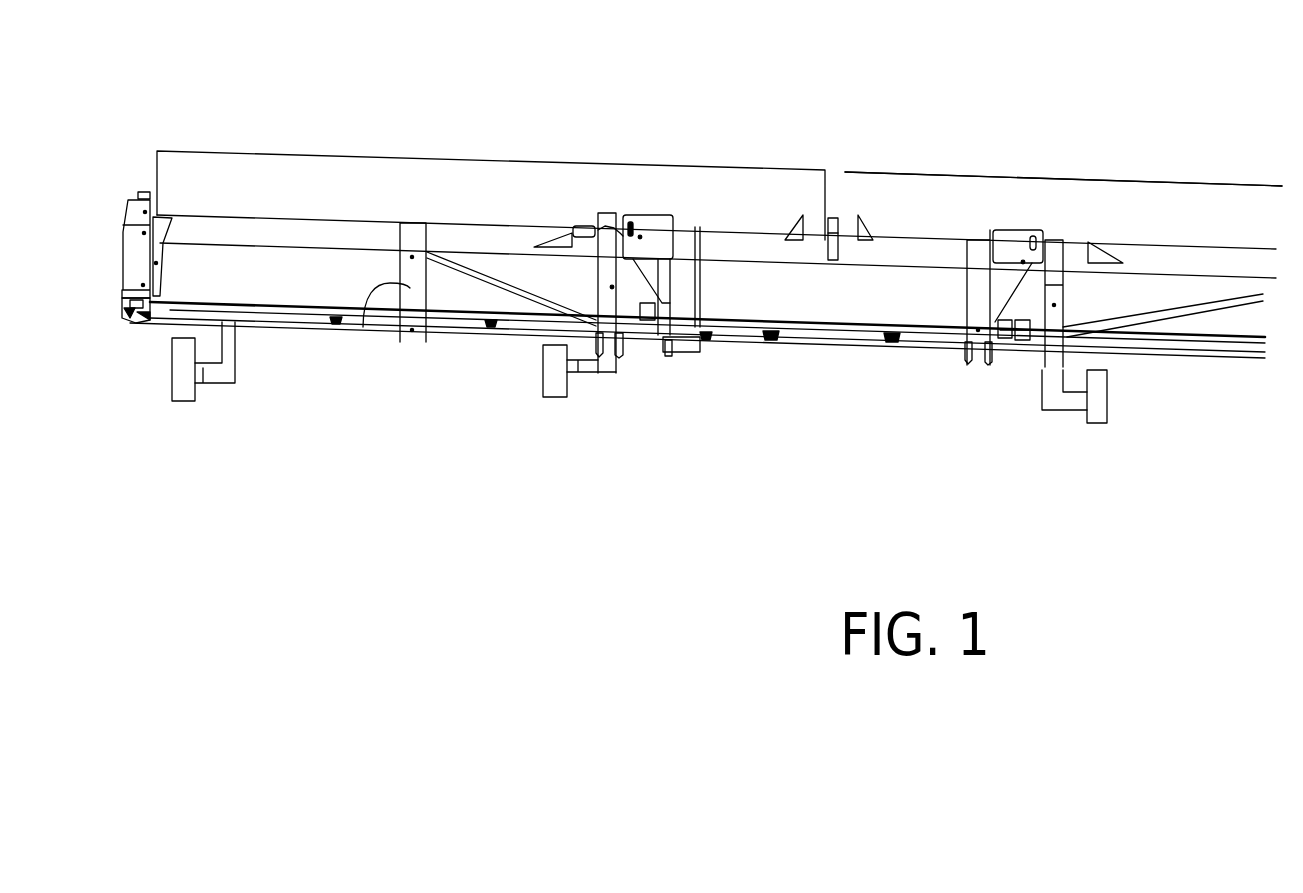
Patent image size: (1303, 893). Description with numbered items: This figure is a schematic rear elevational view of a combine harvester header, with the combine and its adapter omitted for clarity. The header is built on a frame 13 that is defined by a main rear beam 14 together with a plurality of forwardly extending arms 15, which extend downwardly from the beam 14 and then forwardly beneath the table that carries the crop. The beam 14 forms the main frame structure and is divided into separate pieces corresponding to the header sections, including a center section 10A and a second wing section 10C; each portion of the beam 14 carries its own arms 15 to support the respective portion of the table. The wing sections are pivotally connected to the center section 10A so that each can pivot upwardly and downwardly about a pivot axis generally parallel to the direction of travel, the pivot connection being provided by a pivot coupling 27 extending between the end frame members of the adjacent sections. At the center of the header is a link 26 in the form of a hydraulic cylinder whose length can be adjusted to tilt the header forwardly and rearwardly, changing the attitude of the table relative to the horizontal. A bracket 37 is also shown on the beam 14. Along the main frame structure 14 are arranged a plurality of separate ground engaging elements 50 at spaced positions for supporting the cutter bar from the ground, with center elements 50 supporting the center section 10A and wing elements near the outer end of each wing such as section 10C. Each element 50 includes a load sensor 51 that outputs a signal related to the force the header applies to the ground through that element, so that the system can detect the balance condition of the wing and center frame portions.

The center section 10A is at (790, 150).
The second wing section 10C is at (1090, 163).
The frame 13 is at (884, 214).
The main rear beam 14 is at (292, 223).
The forwardly extending arms 15 is at (404, 290).
The link 26 is at (842, 248).
The pivot coupling 27 is at (1013, 347).
The wedge bracket 37 is at (561, 227).
The ground engaging elements 50 is at (177, 398).
The load sensor 51 is at (203, 388).